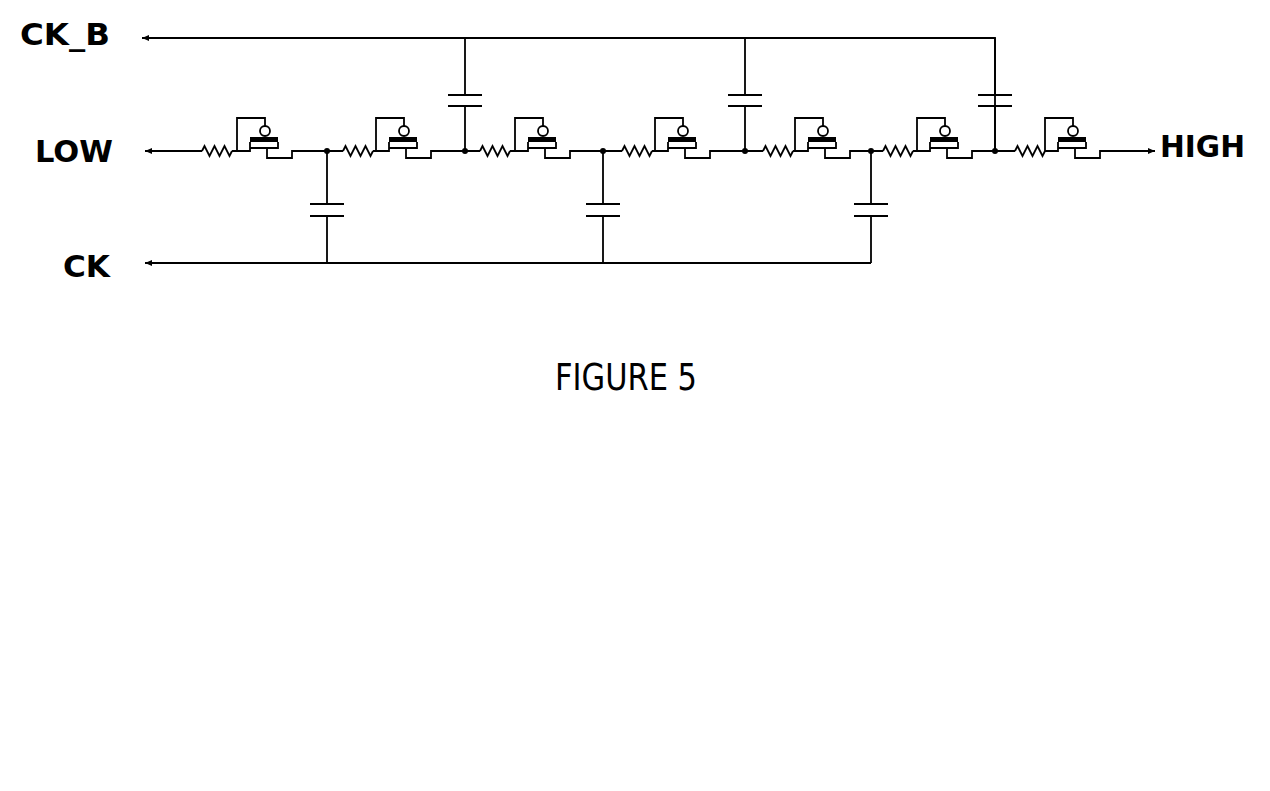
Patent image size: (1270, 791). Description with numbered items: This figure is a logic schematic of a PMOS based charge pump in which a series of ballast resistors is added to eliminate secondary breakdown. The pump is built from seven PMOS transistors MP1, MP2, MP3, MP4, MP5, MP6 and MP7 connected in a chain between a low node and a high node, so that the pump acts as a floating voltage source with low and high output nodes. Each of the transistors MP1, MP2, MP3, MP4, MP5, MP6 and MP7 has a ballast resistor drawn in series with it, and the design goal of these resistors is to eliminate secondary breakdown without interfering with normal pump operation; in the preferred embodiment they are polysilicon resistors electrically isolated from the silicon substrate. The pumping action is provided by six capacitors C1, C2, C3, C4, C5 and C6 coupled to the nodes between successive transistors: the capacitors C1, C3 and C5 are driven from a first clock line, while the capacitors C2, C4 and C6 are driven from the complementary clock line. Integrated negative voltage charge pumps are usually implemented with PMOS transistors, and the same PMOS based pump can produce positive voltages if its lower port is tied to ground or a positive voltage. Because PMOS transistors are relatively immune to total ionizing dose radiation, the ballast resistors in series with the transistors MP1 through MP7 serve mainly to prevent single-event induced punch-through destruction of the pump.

The PMOS transistor MP1 is at (247, 119).
The PMOS transistor MP2 is at (382, 119).
The PMOS transistor MP3 is at (530, 120).
The PMOS transistor MP4 is at (666, 120).
The PMOS transistor MP5 is at (809, 120).
The PMOS transistor MP6 is at (925, 120).
The PMOS transistor MP7 is at (1063, 120).
The capacitor C1 is at (349, 207).
The capacitor C2 is at (479, 94).
The capacitor C3 is at (625, 207).
The capacitor C4 is at (759, 94).
The capacitor C5 is at (893, 207).
The capacitor C6 is at (1009, 94).